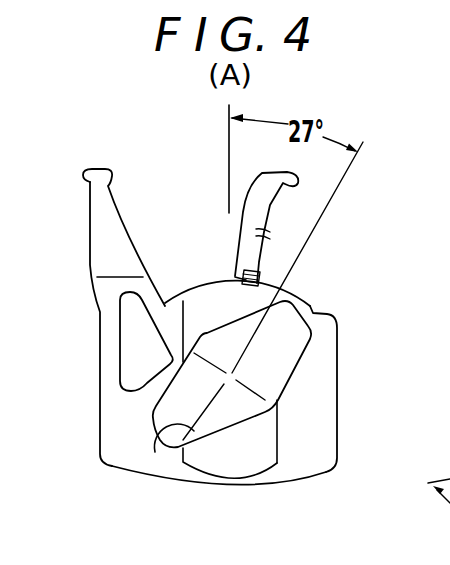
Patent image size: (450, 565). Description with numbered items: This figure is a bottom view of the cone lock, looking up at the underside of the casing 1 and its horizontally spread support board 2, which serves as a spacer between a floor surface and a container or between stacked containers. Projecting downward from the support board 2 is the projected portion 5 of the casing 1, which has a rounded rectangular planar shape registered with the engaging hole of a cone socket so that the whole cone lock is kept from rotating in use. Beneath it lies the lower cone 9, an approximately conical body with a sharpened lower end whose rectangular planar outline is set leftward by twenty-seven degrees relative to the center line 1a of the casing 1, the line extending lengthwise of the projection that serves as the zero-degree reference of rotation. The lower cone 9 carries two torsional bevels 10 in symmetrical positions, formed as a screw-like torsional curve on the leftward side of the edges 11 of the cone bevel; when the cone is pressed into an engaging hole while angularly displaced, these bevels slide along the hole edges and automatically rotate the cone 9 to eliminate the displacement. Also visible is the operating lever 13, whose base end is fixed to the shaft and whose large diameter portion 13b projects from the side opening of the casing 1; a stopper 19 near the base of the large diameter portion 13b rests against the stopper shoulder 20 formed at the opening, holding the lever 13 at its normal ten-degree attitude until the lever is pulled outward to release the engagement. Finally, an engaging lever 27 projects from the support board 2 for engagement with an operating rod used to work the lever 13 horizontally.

The casing 1 is at (262, 462).
The center line 1a is at (228, 151).
The support board 2 is at (115, 425).
The projected portion 5 is at (228, 464).
The lower cone 9 is at (206, 333).
The torsional bevel 10 is at (182, 389).
The edge 11 is at (267, 328).
The operating lever 13 is at (337, 227).
The large diameter portion 13b is at (259, 210).
The stopper 19 is at (234, 278).
The stopper shoulder 20 is at (260, 268).
The engaging lever 27 is at (105, 210).